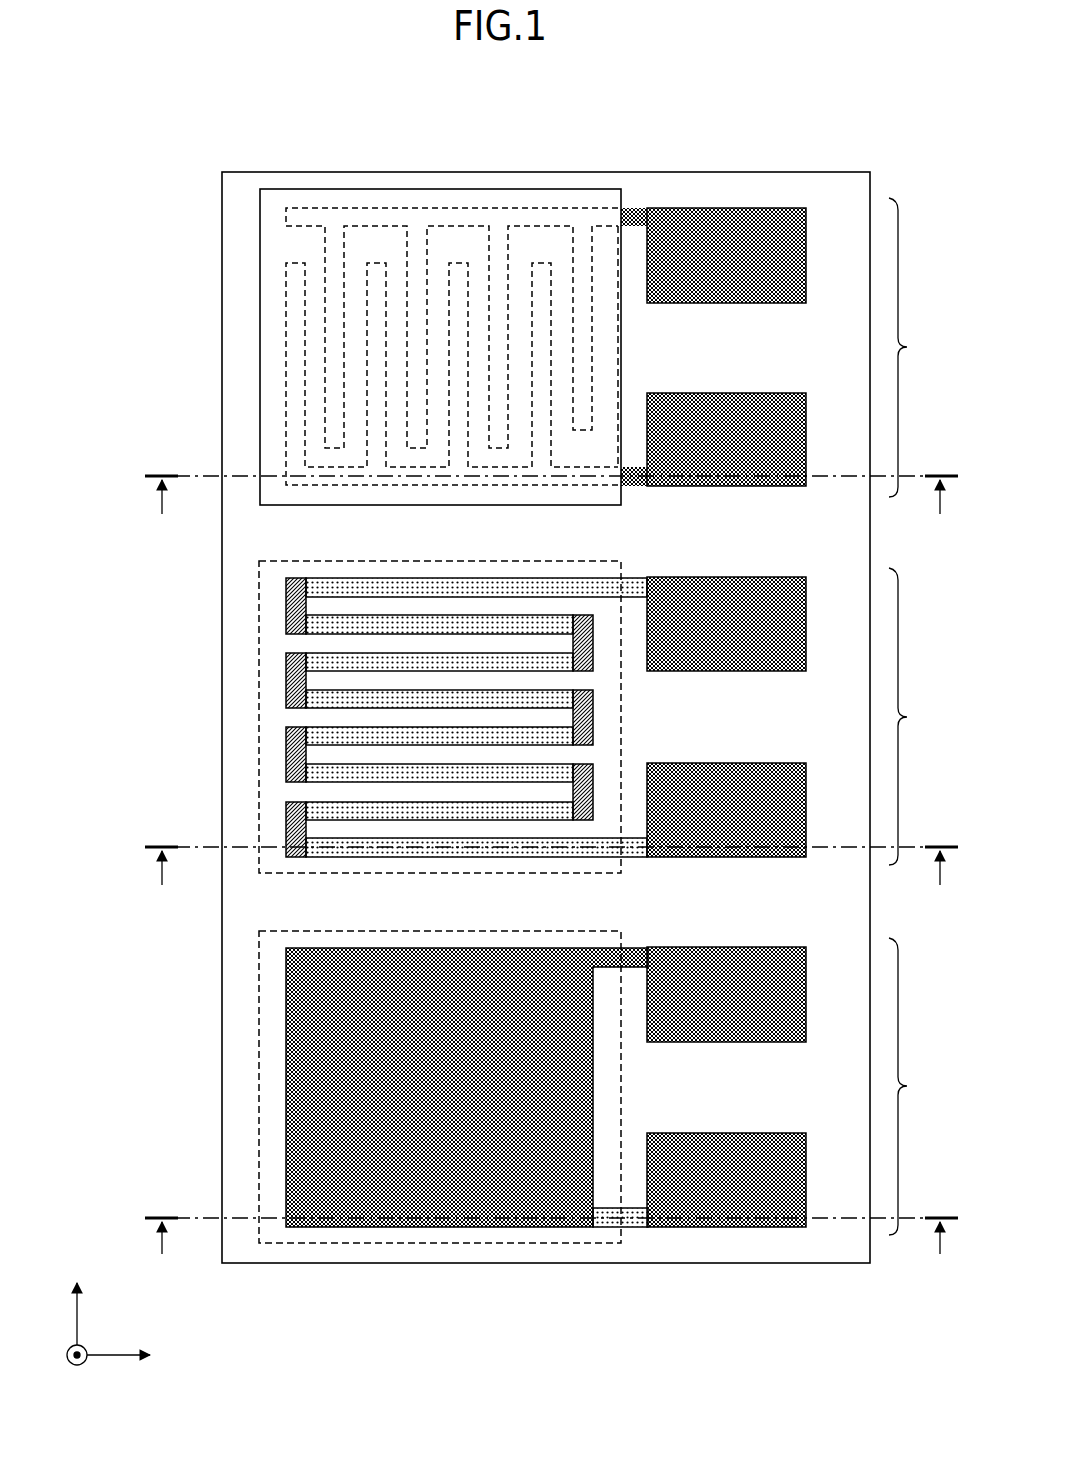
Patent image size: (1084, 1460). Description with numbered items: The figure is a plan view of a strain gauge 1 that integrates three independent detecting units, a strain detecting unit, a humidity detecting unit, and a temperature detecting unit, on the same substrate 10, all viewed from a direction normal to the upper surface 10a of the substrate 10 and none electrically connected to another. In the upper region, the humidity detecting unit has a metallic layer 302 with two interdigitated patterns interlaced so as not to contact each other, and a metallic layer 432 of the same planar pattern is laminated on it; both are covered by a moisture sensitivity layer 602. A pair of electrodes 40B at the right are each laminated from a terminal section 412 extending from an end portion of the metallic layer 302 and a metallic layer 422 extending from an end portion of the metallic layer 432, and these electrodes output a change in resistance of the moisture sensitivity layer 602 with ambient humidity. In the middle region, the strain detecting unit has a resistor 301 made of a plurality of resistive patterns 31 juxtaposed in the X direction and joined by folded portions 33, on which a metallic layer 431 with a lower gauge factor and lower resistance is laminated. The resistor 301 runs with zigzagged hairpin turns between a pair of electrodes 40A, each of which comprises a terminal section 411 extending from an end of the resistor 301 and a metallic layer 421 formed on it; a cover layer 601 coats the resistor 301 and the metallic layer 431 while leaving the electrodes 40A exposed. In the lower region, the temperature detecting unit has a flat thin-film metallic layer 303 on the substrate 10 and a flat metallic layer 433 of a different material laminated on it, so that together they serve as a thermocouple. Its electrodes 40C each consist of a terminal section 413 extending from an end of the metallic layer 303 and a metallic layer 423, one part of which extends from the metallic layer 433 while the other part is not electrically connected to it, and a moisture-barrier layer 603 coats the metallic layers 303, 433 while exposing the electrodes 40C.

The strain gauge 1 is at (109, 98).
The substrate 10 is at (250, 158).
The upper surface 10a is at (305, 187).
The moisture sensitivity layer 602 is at (262, 242).
The metallic layer 302 is at (283, 327).
The metallic layer 432 is at (290, 382).
The electrodes 40B is at (785, 117).
The metallic layer 422 is at (704, 237).
The terminal section 412 is at (762, 207).
The cover layer 601 is at (258, 582).
The resistor 301 is at (148, 630).
The resistive patterns 31 is at (335, 652).
The folded portions 33 is at (285, 682).
The metallic layer 431 is at (293, 752).
The electrodes 40A is at (850, 722).
The metallic layer 421 is at (768, 797).
The terminal section 411 is at (807, 802).
The moisture-barrier layer 603 is at (260, 982).
The metallic layer 433 is at (330, 1073).
The metallic layer 303 is at (607, 1228).
The electrodes 40C is at (785, 1325).
The metallic layer 423 is at (703, 1197).
The terminal section 413 is at (762, 1224).